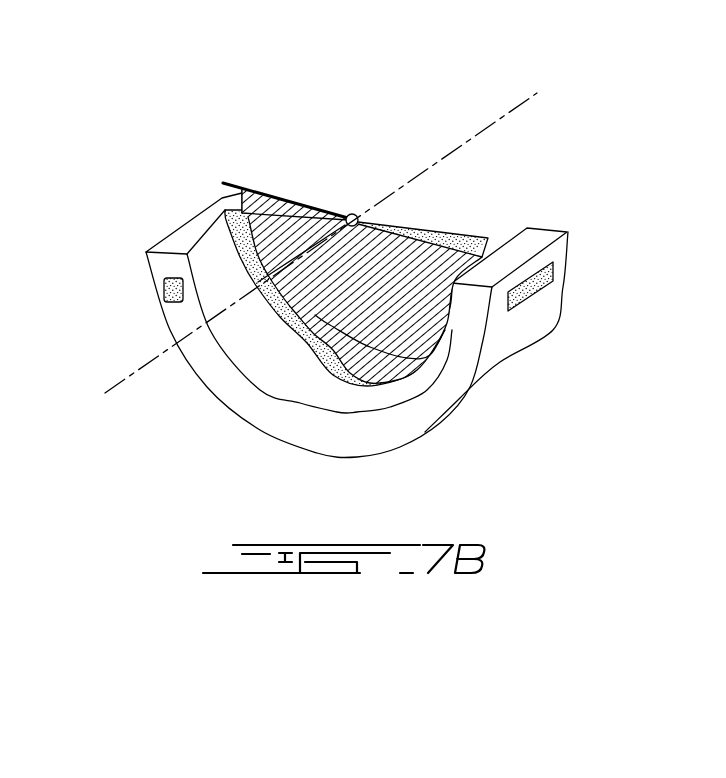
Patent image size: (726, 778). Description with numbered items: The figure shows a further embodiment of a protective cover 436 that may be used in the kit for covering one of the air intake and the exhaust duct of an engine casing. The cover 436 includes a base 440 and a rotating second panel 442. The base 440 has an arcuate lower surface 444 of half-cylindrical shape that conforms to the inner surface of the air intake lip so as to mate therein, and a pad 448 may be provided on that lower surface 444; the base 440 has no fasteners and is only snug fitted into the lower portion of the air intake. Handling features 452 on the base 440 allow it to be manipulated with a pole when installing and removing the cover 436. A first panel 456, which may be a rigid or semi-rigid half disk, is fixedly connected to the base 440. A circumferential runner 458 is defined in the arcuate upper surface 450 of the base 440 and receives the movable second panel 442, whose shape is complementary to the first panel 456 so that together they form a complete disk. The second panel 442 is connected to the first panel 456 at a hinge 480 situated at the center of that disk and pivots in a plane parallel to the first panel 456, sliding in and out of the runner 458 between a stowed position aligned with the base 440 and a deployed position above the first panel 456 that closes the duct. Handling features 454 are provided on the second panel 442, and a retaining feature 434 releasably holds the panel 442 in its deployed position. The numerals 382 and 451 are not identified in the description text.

The axis 382 is at (510, 107).
The retaining feature 434 is at (233, 187).
The cover 436 is at (382, 263).
The base 440 is at (359, 285).
The second panel 442 is at (282, 197).
The lower surface 444 is at (497, 372).
The pad 448 is at (540, 285).
The upper surface 450 is at (213, 273).
The bottom surface 451 is at (315, 432).
The handling features 452 is at (163, 293).
The handling features 454 is at (253, 196).
The first panel 456 is at (467, 240).
The circumferential runner 458 is at (322, 300).
The hinge 480 is at (352, 214).